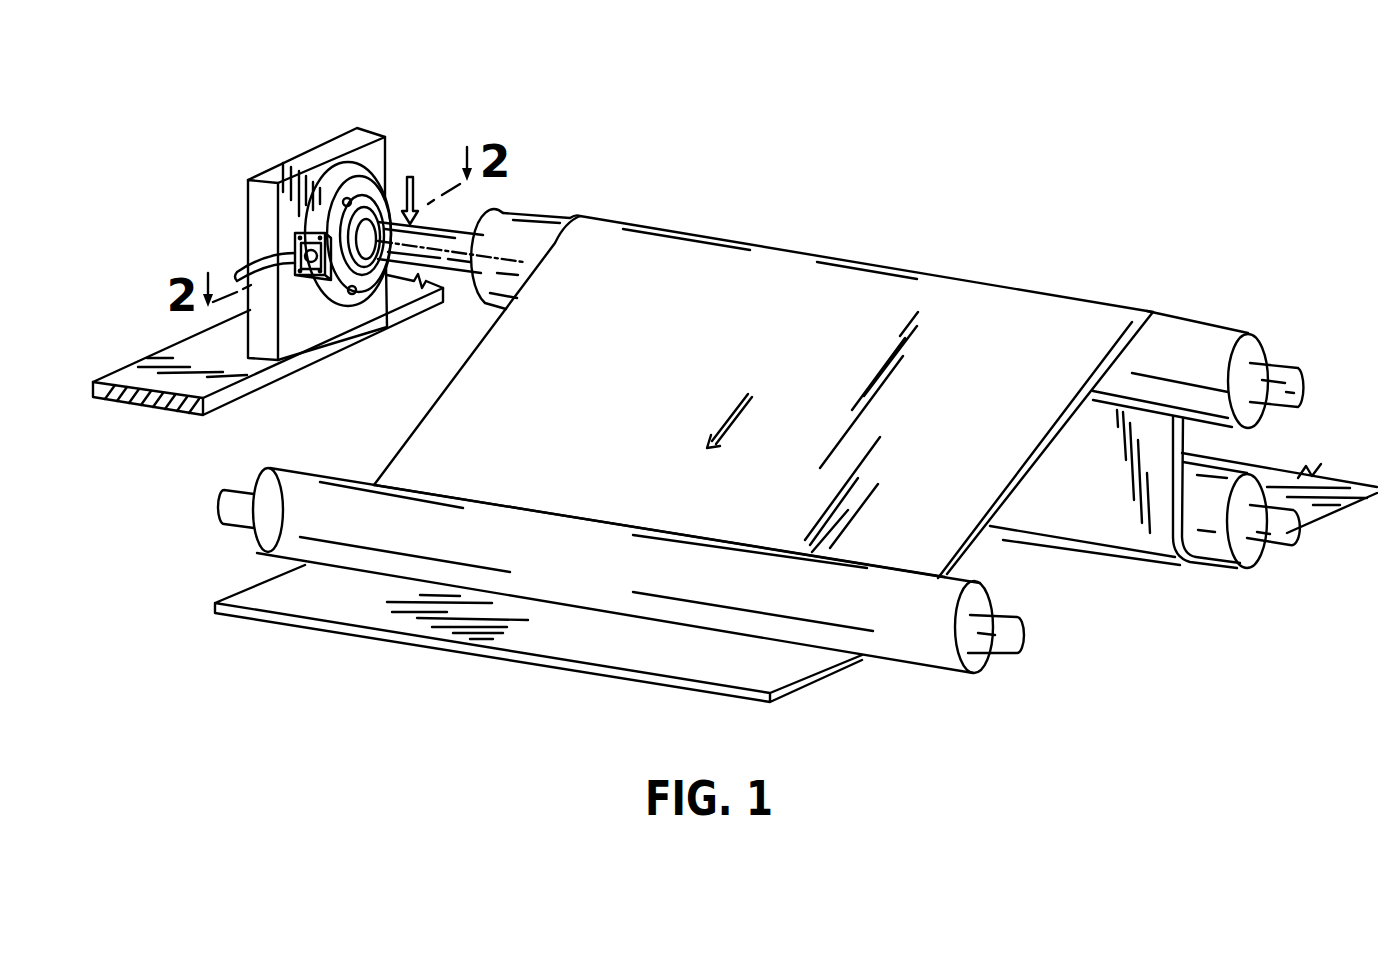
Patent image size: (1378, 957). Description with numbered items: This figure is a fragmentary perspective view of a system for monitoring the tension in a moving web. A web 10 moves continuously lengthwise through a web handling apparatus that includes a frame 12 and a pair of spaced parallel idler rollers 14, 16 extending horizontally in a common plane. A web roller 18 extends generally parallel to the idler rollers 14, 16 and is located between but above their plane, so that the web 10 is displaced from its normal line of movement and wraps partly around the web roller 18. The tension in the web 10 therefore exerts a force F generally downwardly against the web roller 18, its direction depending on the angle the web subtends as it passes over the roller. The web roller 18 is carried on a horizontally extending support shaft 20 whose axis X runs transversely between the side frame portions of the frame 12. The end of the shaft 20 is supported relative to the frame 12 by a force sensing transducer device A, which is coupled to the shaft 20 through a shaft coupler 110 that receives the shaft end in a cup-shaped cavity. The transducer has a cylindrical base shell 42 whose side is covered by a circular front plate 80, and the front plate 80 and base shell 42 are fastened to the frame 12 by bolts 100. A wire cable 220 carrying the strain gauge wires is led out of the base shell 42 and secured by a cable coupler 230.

The web 10 is at (733, 272).
The frame 12 is at (348, 138).
The idler roller 14 is at (925, 647).
The idler roller 16 is at (1212, 541).
The web roller 18 is at (1198, 343).
The support shaft 20 is at (460, 262).
The base shell 42 is at (337, 180).
The front plate 80 is at (378, 182).
The bolts 100 is at (354, 296).
The shaft coupler 110 is at (386, 275).
The wire cable 220 is at (267, 273).
The cable coupler 230 is at (319, 280).
The transducer device A is at (390, 122).
The force F is at (415, 188).
The axis X is at (524, 261).